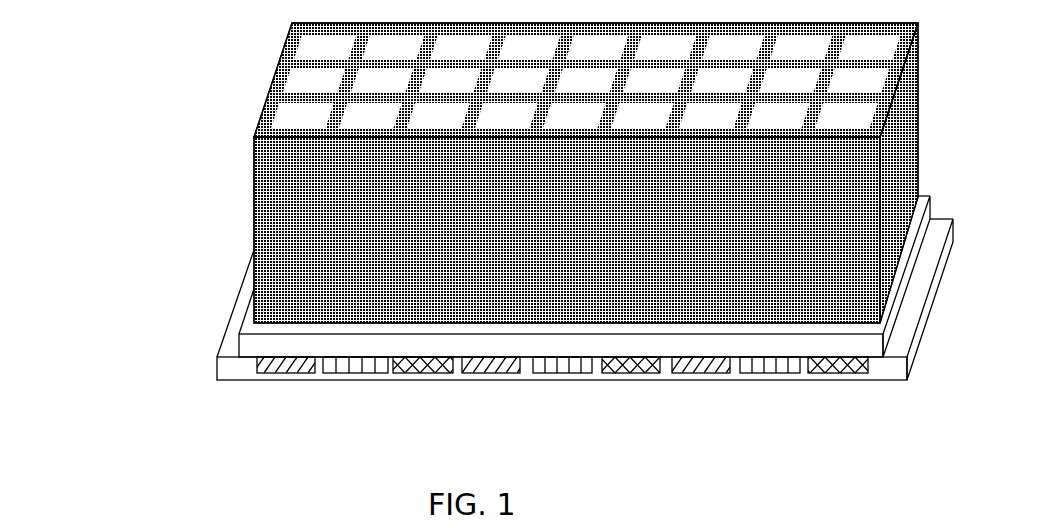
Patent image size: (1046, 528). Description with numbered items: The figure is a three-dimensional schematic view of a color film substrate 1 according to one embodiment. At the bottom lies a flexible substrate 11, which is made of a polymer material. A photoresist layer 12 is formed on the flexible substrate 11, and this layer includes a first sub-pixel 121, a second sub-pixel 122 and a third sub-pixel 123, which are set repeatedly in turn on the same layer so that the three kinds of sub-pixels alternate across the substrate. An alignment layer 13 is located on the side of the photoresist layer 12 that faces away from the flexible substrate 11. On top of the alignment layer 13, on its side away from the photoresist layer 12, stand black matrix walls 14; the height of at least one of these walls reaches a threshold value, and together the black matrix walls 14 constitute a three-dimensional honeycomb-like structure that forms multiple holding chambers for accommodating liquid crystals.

The color film substrate 1 is at (113, 115).
The flexible substrate 11 is at (317, 380).
The photoresist layer 12 is at (182, 128).
The first sub-pixel 121 is at (490, 372).
The second sub-pixel 122 is at (560, 372).
The third sub-pixel 123 is at (628, 372).
The alignment layer 13 is at (742, 347).
The black matrix walls 14 is at (815, 305).